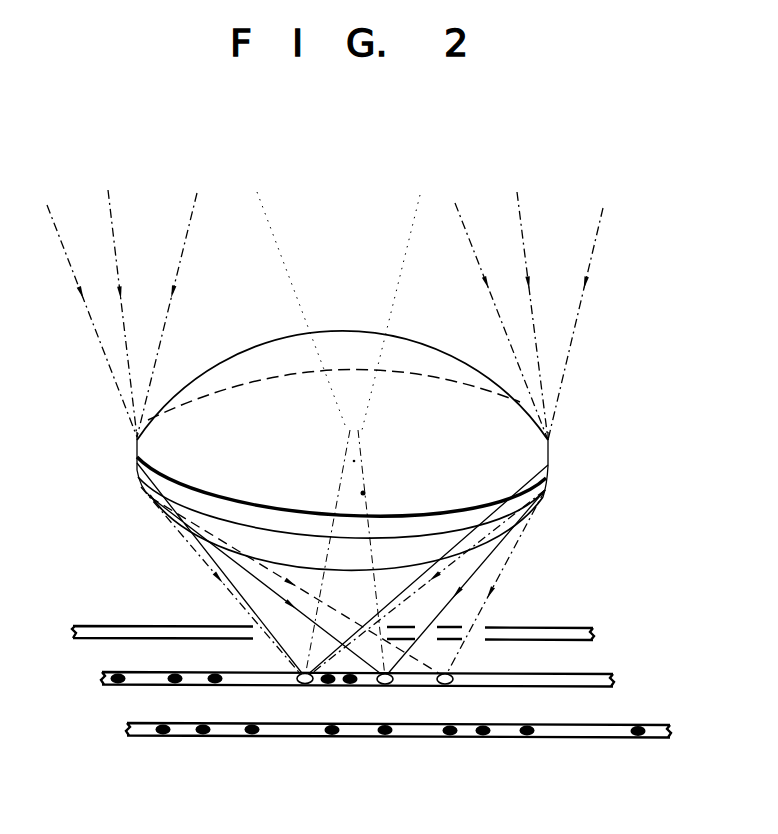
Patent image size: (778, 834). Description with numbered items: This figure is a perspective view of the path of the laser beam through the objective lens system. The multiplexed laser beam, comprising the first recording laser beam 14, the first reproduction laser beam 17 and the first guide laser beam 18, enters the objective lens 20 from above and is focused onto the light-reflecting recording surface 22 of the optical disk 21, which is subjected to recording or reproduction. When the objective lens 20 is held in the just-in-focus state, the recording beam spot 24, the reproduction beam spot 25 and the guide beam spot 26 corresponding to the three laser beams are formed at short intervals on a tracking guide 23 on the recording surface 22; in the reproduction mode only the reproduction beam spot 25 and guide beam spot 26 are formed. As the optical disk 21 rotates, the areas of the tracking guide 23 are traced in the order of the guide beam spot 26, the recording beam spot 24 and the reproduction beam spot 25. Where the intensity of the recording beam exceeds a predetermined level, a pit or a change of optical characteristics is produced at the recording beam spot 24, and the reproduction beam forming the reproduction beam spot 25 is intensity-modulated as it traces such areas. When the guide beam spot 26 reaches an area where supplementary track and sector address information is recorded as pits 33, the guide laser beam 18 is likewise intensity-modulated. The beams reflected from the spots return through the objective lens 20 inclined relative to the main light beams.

The first recording laser beam 14 is at (519, 213).
The first reproduction laser beam 17 is at (602, 221).
The first guide laser beam 18 is at (465, 231).
The objective lens 20 is at (549, 466).
The optical disk 21 is at (568, 522).
The recording surface 22 is at (560, 566).
The tracking guide 23 is at (593, 627).
The recording beam spot 24 is at (386, 684).
The reproduction beam spot 25 is at (306, 684).
The guide beam spot 26 is at (446, 684).
The pits 33 is at (162, 723).